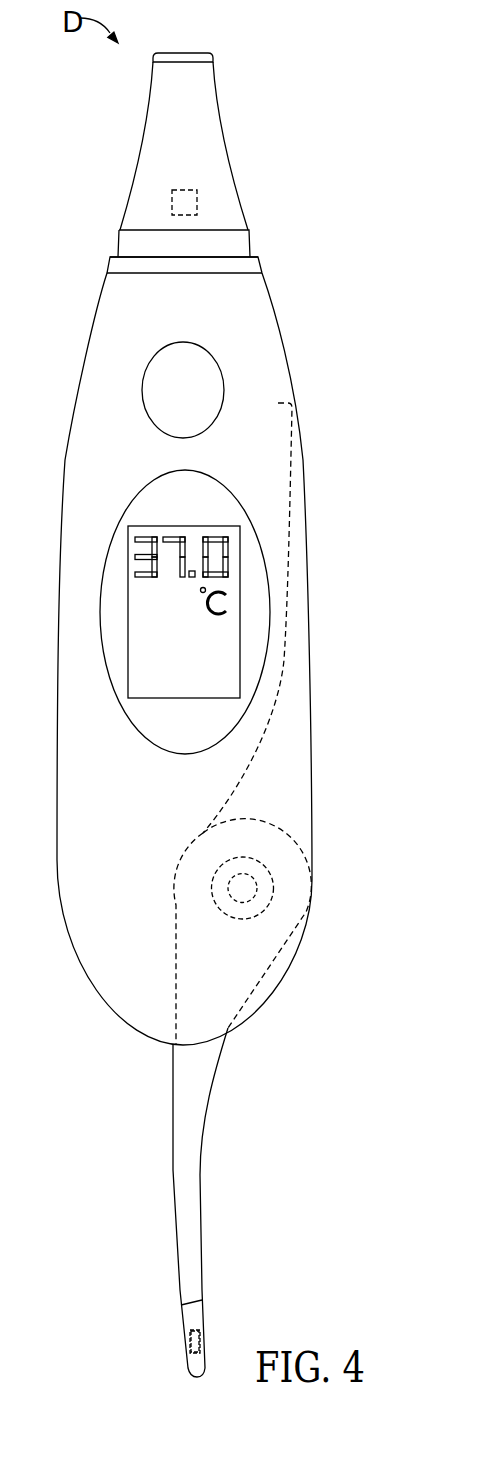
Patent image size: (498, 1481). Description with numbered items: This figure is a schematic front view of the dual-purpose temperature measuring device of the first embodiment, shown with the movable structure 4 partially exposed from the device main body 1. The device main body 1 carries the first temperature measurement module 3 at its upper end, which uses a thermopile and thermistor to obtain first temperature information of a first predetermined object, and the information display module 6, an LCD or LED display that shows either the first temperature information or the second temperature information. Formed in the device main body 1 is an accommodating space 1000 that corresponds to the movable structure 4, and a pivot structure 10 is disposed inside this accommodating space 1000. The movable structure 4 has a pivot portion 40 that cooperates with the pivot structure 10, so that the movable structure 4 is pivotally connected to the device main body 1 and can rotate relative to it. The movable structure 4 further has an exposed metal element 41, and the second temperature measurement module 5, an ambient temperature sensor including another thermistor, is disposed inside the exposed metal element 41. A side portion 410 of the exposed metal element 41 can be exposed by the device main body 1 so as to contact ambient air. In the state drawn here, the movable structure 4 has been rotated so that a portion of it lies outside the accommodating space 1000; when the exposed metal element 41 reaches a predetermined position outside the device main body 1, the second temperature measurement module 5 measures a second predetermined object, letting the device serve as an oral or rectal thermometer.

The device main body 1 is at (76, 350).
The first temperature measurement module 3 is at (204, 199).
The information display module 6 is at (126, 619).
The accommodating space 1000 is at (284, 761).
The pivot structure 10 is at (242, 886).
The pivot portion 40 is at (298, 933).
The movable structure 4 is at (200, 1172).
The exposed metal element 41 is at (189, 1315).
The side portion 410 is at (172, 1351).
The second temperature measurement module 5 is at (207, 1337).